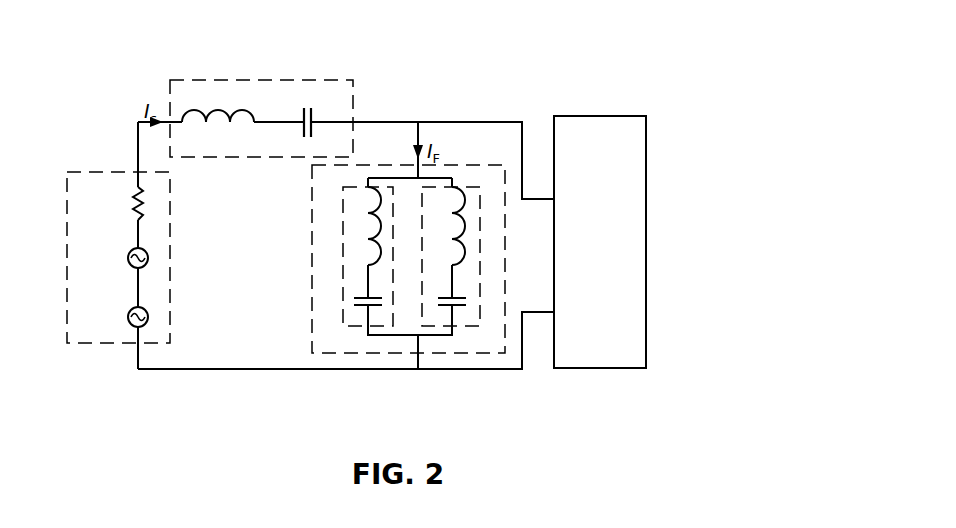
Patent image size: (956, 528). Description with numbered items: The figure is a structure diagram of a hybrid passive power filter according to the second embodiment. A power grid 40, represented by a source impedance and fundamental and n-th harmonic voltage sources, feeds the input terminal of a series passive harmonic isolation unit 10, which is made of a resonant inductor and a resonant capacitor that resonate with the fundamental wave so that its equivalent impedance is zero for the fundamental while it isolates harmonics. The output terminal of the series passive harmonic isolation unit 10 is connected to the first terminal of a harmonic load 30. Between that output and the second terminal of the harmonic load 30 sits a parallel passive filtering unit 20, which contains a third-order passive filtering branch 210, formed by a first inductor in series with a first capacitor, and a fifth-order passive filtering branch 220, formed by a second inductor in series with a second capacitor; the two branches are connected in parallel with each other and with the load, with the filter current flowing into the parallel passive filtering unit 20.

The series passive harmonic isolation unit 10 is at (353, 84).
The parallel passive filtering unit 20 is at (399, 238).
The third-order passive filtering branch 210 is at (342, 200).
The fifth-order passive filtering branch 220 is at (472, 188).
The harmonic load 30 is at (646, 180).
The power grid 40 is at (170, 260).